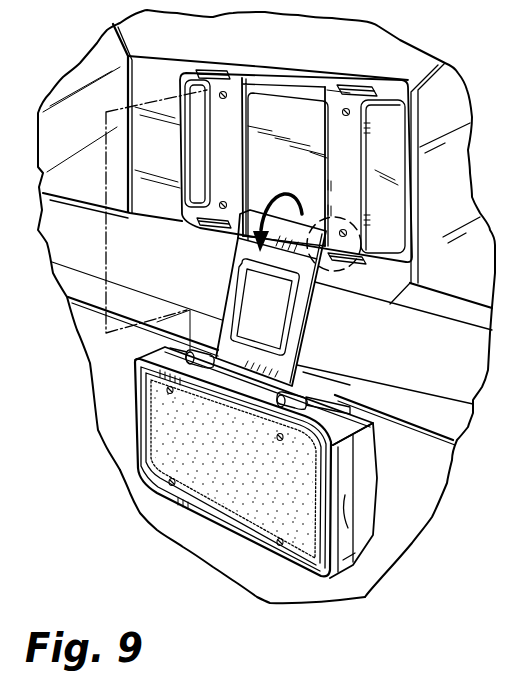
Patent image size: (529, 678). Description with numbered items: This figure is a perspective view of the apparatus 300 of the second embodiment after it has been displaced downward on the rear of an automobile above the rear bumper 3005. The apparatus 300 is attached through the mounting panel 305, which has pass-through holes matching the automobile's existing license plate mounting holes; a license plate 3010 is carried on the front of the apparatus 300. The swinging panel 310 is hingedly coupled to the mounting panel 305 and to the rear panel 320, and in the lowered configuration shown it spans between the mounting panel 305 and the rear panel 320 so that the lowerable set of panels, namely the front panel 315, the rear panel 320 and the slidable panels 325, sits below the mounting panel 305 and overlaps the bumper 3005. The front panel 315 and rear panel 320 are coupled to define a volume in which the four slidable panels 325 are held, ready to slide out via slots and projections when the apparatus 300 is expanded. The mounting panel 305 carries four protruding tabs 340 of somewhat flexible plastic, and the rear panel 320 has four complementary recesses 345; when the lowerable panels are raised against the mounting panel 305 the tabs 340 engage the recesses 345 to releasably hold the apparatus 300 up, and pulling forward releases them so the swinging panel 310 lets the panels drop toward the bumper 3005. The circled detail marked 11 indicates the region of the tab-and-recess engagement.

The apparatus 300 is at (426, 115).
The mounting panel 305 is at (334, 139).
The protruding tabs 340 is at (213, 72).
The swinging panel 310 is at (227, 310).
The detail circle for FIG. 11 is at (336, 290).
The recesses 345 is at (337, 404).
The rear panel 320 is at (367, 492).
The slidable panels 325 is at (348, 530).
The front panel 315 is at (336, 548).
The license plate 3010 is at (157, 447).
The rear bumper 3005 is at (258, 597).